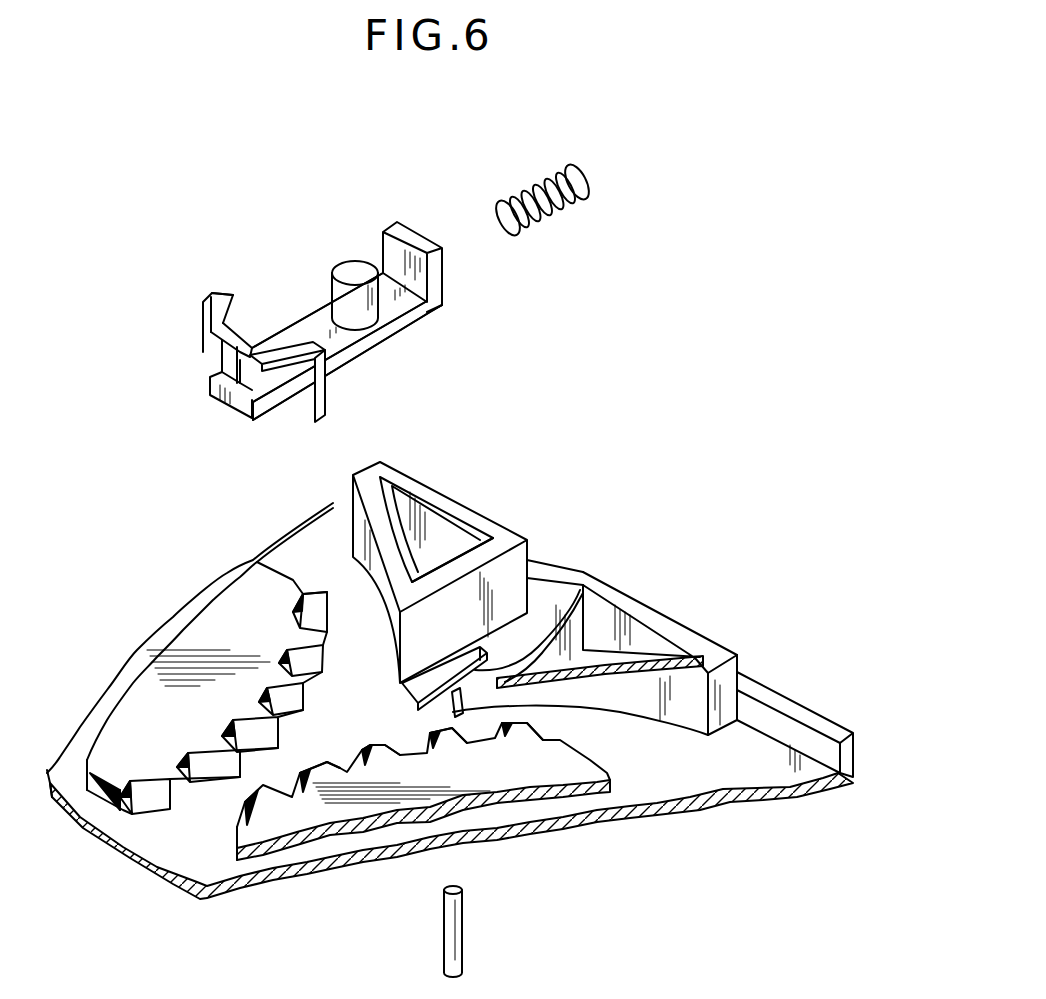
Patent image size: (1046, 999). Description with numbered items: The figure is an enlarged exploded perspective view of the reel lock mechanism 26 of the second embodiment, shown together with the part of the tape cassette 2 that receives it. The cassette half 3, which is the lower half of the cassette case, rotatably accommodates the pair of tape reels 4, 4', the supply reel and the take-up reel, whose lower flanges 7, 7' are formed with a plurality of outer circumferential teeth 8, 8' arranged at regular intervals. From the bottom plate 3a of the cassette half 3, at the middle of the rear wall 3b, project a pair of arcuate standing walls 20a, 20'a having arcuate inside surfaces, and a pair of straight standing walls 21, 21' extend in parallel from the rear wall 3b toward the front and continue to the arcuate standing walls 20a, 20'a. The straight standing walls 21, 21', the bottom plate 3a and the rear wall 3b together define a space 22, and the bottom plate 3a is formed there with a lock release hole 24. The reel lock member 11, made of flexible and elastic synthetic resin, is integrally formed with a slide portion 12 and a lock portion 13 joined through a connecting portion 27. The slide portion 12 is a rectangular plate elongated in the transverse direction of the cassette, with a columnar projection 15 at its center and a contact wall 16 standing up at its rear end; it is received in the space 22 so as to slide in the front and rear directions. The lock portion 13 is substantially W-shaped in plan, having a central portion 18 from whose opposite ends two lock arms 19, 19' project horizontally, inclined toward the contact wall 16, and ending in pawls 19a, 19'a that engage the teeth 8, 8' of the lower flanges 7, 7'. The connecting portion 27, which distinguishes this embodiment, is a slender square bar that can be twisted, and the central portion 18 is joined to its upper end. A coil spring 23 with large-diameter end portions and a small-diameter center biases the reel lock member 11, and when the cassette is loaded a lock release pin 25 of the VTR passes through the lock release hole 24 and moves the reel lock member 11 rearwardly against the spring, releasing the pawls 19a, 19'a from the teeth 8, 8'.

The tape cassette 2 is at (757, 678).
The cassette half 3 is at (778, 700).
The bottom plate 3a is at (763, 753).
The rear wall 3b is at (505, 643).
The tape reel 4 is at (423, 772).
The tape reel 4' is at (268, 551).
The reel flange 7 is at (441, 803).
The reel flange 7' is at (190, 646).
The outer circumferential teeth 8 is at (394, 762).
The outer circumferential teeth 8' is at (226, 703).
The reel lock member 11 is at (384, 192).
The slide portion 12 is at (425, 312).
The lock portion 13 is at (242, 330).
The columnar projection 15 is at (357, 263).
The contact wall 16 is at (418, 231).
The central portion 18 is at (222, 348).
The lock arm 19 is at (287, 324).
The lock arm 19' is at (184, 317).
The pawl 19a is at (320, 385).
The pawl 19'a is at (214, 261).
The arcuate standing wall 20a is at (630, 663).
The arcuate standing wall 20'a is at (440, 571).
The straight standing wall 21 is at (660, 602).
The straight standing wall 21' is at (484, 536).
The space 22 is at (557, 633).
The coil spring 23 is at (527, 194).
The lock release hole 24 is at (440, 686).
The lock release pin 25 is at (467, 907).
The reel lock mechanism 26 is at (638, 314).
The connecting portion 27 is at (210, 385).